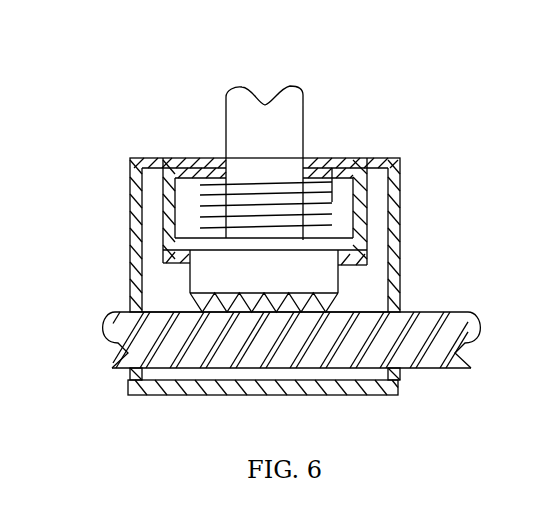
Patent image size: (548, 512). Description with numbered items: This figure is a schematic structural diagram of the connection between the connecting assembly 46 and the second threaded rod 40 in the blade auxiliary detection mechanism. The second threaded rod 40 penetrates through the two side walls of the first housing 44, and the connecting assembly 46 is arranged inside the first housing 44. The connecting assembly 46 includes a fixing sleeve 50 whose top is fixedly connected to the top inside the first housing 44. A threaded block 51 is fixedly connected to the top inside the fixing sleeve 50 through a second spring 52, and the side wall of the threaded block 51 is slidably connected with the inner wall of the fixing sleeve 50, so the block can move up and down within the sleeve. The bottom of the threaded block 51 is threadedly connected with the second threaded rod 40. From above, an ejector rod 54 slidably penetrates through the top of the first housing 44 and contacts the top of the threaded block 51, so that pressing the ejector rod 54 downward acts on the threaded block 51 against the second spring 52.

The second threaded rod 40 is at (378, 356).
The first housing 44 is at (130, 218).
The connecting assembly 46 is at (358, 298).
The fixing sleeve 50 is at (162, 158).
The threaded block 51 is at (313, 253).
The second spring 52 is at (297, 140).
The ejector rod 54 is at (283, 168).